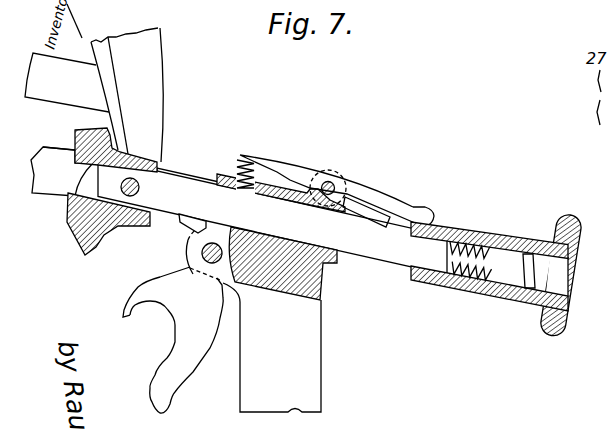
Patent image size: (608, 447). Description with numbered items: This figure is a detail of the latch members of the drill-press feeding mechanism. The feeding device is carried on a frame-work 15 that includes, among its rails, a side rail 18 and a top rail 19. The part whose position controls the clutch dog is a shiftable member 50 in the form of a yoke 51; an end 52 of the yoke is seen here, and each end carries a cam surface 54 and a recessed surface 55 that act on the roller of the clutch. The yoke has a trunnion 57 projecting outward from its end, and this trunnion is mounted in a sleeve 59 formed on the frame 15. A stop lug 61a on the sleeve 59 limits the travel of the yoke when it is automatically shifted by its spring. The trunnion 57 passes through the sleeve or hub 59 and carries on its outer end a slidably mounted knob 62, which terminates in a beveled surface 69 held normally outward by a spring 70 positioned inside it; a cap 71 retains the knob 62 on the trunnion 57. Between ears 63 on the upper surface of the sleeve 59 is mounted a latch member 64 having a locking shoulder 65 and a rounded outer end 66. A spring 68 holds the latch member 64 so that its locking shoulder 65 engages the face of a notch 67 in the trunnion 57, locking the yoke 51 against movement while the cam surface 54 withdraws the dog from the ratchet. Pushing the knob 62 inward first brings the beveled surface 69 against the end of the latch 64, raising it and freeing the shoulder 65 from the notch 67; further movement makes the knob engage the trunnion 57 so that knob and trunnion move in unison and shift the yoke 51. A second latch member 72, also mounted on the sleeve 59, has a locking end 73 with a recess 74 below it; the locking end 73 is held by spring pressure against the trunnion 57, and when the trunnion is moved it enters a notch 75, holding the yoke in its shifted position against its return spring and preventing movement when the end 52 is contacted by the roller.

The frame-work 15 is at (332, 338).
The side rail 18 is at (312, 380).
The top rail 19 is at (50, 148).
The shiftable member 50 is at (168, 41).
The yoke 51 is at (161, 67).
The end 52 is at (137, 150).
The cam surface 54 is at (74, 242).
The recessed surface 55 is at (78, 165).
The trunnion 57 is at (170, 182).
The sleeve 59 is at (270, 182).
The stop lug 61a is at (200, 174).
The knob 62 is at (493, 238).
The ears 63 is at (301, 183).
The latch member 64 is at (361, 187).
The locking shoulder 65 is at (426, 208).
The rounded outer end 66 is at (434, 219).
The notch 67 is at (383, 222).
The spring 68 is at (242, 165).
The beveled surface 69 is at (420, 279).
The spring 70 is at (470, 282).
The cap 71 is at (538, 273).
The latch member 72 is at (123, 289).
The locking end 73 is at (183, 233).
The recess 74 is at (162, 303).
The notch 75 is at (183, 215).